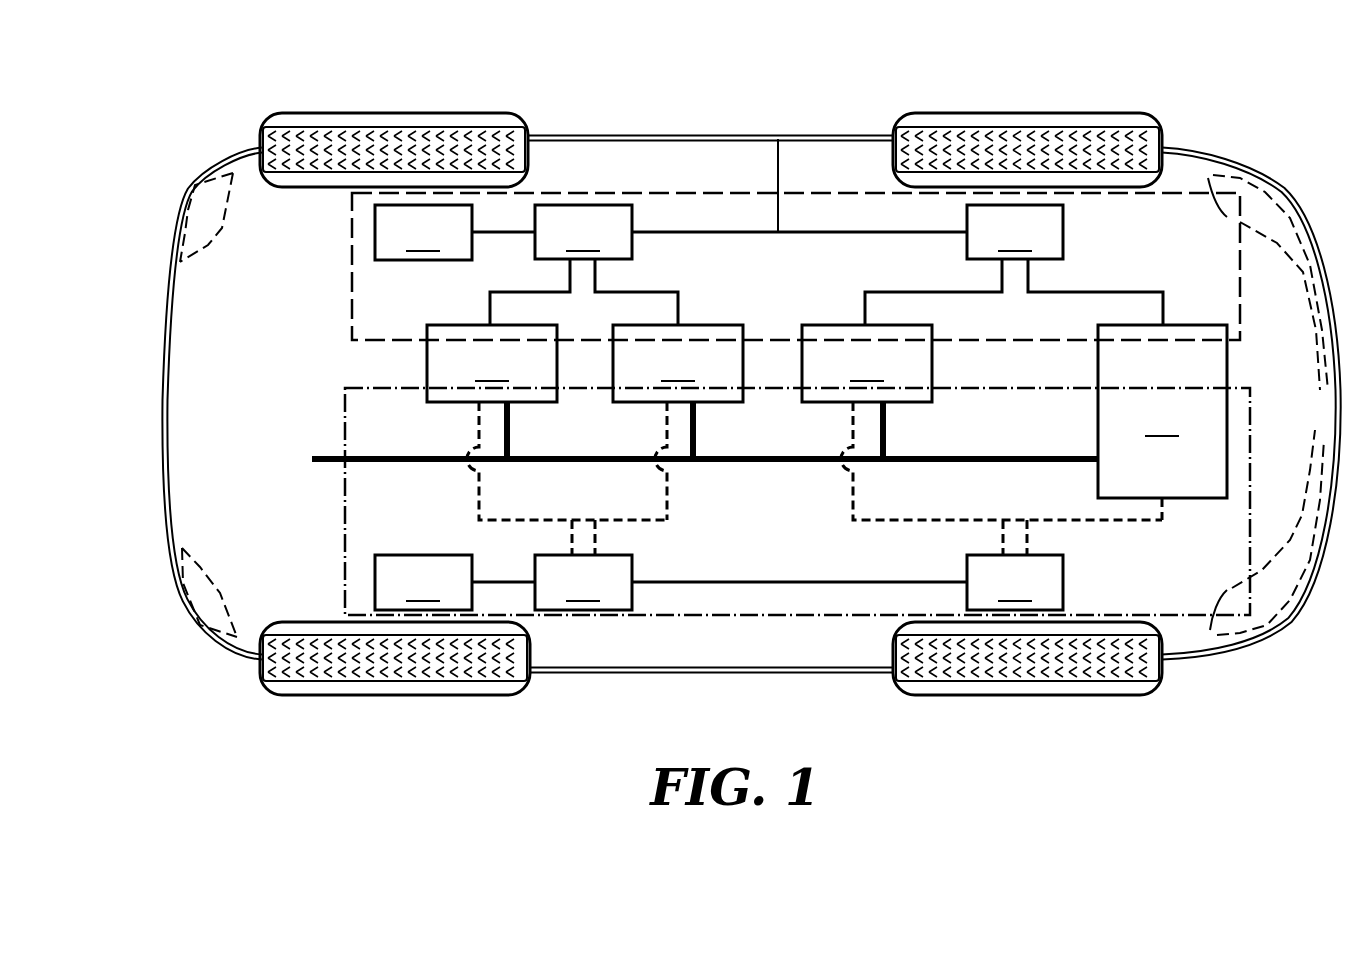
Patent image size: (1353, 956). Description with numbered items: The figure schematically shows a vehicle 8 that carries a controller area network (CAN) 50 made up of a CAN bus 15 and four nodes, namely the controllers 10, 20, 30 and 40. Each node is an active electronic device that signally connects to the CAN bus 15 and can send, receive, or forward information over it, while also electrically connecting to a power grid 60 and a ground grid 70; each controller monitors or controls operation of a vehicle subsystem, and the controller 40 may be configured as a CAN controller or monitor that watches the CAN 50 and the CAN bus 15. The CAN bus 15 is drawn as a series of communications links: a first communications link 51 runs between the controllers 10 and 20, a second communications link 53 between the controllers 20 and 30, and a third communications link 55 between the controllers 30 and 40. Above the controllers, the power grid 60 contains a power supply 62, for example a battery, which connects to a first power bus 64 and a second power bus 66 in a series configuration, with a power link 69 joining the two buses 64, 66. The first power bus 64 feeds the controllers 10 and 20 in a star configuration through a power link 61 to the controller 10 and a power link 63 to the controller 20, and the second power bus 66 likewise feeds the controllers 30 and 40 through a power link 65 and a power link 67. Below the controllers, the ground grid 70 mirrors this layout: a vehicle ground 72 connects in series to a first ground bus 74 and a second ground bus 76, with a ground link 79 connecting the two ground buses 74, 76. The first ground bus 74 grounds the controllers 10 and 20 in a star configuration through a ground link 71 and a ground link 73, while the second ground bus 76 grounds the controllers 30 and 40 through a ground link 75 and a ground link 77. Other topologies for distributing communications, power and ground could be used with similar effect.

The vehicle 8 is at (158, 401).
The controller 10 is at (492, 363).
The CAN bus 15 is at (983, 443).
The controller 20 is at (678, 363).
The controller 30 is at (867, 363).
The controller 40 is at (1162, 411).
The controller area network 50 is at (330, 448).
The first communications link 51 is at (613, 463).
The second communications link 53 is at (743, 463).
The third communications link 55 is at (1028, 463).
The power grid 60 is at (340, 345).
The power link 61 is at (489, 308).
The power supply 62 is at (455, 232).
The power link 63 is at (679, 317).
The first power bus 64 is at (751, 232).
The power link 65 is at (921, 291).
The second power bus 66 is at (1015, 232).
The power link 67 is at (1087, 291).
The power link 69 is at (778, 138).
The ground grid 70 is at (333, 533).
The ground link 71 is at (479, 493).
The vehicle ground 72 is at (455, 582).
The ground link 73 is at (668, 500).
The first ground bus 74 is at (583, 582).
The ground link 75 is at (920, 521).
The second ground bus 76 is at (1015, 582).
The ground link 77 is at (1088, 521).
The ground link 79 is at (718, 583).